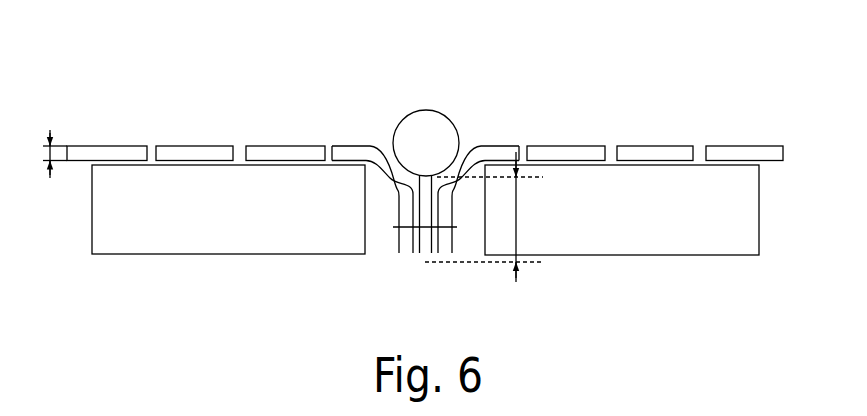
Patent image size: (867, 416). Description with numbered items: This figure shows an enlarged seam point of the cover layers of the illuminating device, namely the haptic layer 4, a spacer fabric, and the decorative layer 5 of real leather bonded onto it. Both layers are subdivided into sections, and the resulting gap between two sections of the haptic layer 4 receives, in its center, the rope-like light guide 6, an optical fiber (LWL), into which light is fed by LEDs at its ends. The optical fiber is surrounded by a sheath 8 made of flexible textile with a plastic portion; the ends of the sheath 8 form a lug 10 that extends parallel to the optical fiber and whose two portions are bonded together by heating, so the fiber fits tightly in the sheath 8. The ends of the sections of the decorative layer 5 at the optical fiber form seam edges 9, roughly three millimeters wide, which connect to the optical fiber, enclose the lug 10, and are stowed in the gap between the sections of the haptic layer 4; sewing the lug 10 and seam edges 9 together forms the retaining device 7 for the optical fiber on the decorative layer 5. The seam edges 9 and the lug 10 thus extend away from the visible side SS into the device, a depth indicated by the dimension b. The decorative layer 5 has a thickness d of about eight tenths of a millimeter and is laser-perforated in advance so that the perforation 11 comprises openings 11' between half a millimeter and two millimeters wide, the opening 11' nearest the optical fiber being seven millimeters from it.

The haptic layer 4 is at (303, 223).
The decorative layer 5 is at (451, 184).
The rope-like light guide 6 is at (431, 142).
The retaining device 7 is at (437, 265).
The sheath 8 is at (407, 110).
The seam edges 9 is at (489, 287).
The lug 10 is at (420, 240).
The perforation 11 is at (655, 112).
The openings 11' is at (196, 225).
The visible side SS is at (244, 100).
The thickness of the decorative layer d is at (48, 154).
The depth of groove b is at (490, 217).